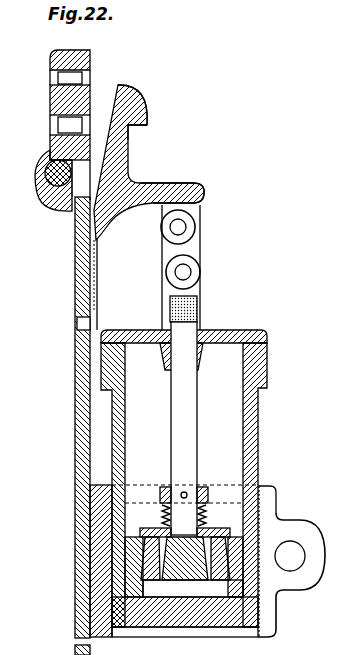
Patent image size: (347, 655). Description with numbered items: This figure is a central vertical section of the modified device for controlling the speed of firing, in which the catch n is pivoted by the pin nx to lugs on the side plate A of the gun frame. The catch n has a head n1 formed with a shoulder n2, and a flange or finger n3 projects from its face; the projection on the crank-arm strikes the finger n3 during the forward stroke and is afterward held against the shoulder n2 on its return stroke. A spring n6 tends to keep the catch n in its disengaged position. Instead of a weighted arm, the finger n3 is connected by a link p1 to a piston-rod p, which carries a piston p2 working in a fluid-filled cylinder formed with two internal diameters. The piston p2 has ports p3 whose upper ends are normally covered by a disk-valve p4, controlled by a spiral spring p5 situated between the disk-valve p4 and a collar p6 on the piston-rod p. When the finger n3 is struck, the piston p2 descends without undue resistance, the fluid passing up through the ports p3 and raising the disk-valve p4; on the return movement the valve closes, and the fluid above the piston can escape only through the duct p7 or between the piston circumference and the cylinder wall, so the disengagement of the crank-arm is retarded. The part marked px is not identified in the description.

The catch n is at (149, 162).
The head n1 is at (138, 105).
The shoulder n2 is at (140, 126).
The flange or finger n3 is at (181, 193).
The pin nx is at (40, 182).
The spring n6 is at (97, 281).
The side plate A is at (72, 426).
The piston-rod p is at (259, 410).
The link p1 is at (196, 251).
The piston p2 is at (287, 521).
The ports p3 is at (185, 558).
The disk-valve p4 is at (213, 517).
The spiral spring p5 is at (157, 517).
The collar p6 is at (166, 490).
The duct p7 is at (125, 539).
The central wedge px is at (185, 558).